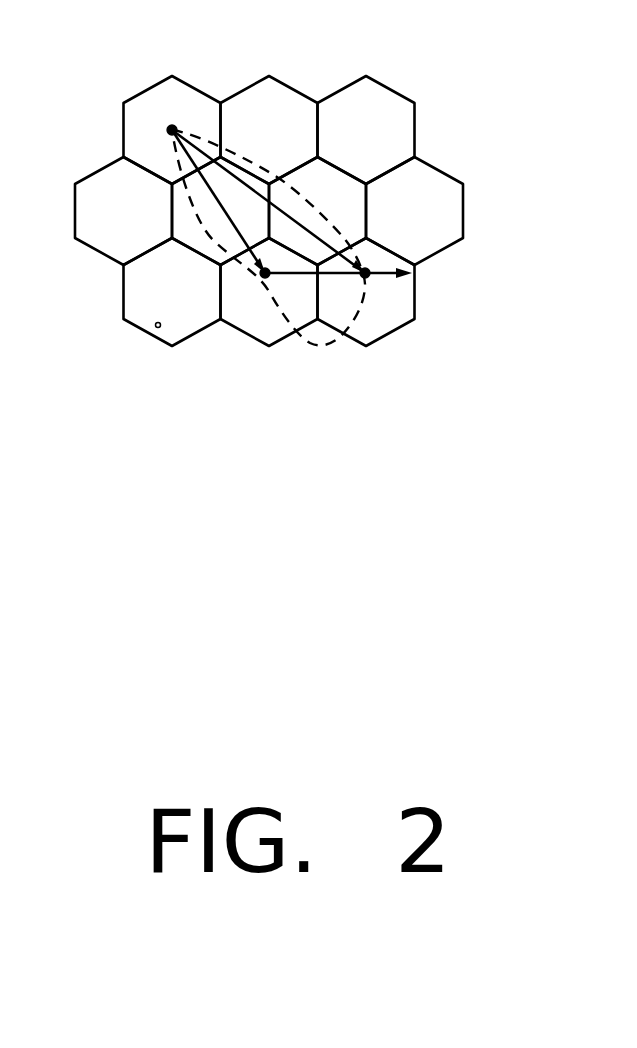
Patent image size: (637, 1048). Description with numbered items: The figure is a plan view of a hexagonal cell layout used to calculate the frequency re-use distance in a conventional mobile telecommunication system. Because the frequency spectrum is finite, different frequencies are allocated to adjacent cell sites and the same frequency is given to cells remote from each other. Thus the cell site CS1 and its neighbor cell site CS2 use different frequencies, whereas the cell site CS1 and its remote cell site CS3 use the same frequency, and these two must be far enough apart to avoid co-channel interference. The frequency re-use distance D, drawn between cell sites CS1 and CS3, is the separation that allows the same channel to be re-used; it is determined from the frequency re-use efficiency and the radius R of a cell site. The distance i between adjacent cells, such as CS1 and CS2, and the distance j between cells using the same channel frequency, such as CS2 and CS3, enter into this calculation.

The cell site CS1 is at (365, 330).
The neighbor cell site CS2 is at (253, 322).
The remote cell site CS3 is at (188, 100).
The frequency re-use distance D is at (268, 201).
The radius of a cell site R is at (368, 278).
The distance between adjacent cells i is at (338, 319).
The distance between cells using the same channel frequency j is at (218, 201).